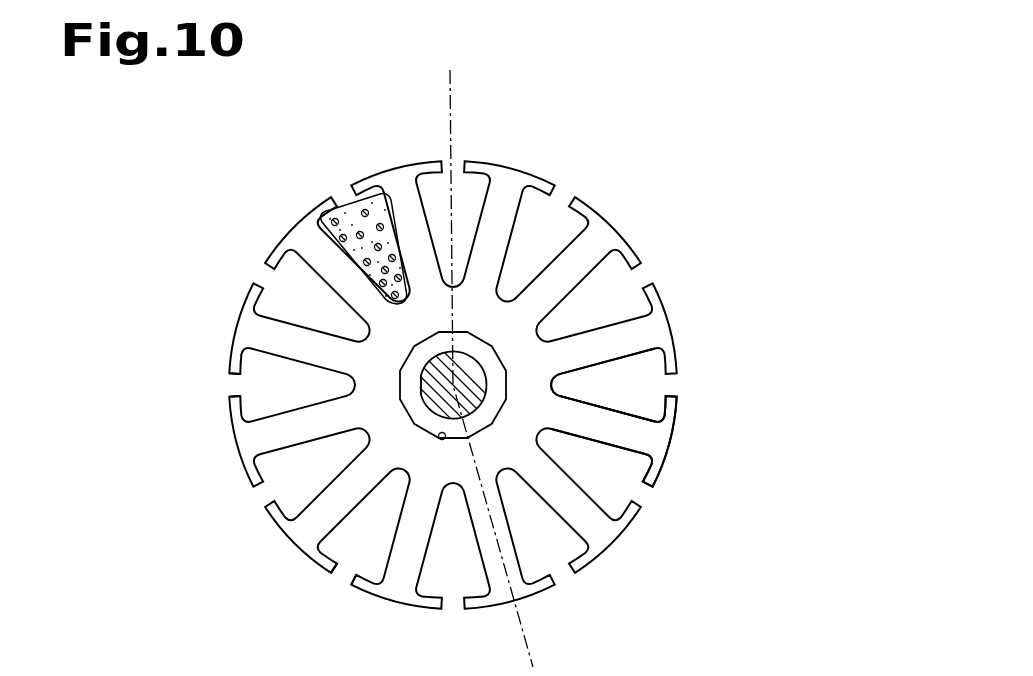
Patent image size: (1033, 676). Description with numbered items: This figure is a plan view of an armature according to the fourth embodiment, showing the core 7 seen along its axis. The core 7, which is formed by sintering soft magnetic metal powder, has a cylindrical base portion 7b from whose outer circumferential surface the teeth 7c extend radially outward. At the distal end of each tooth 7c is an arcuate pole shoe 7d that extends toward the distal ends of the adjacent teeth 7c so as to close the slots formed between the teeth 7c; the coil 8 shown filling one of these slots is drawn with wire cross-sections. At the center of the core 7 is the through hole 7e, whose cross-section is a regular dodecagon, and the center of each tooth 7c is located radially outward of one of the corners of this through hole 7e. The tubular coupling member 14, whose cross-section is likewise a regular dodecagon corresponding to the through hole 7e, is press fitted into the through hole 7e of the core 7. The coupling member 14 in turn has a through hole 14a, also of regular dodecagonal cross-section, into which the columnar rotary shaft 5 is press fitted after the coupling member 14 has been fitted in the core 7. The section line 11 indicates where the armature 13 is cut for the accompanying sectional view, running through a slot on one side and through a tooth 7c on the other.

The rotary shaft 5 is at (474, 368).
The core 7 is at (673, 415).
The cylindrical base portion 7b is at (533, 385).
The teeth 7c is at (232, 421).
The pole shoe 7d is at (325, 541).
The through hole 7e is at (442, 440).
The coil winding 8 is at (323, 202).
The section line XI-XI 11 is at (458, 87).
The stator core 13 is at (656, 136).
The coupling member 14 is at (421, 350).
The through hole 14a is at (420, 385).